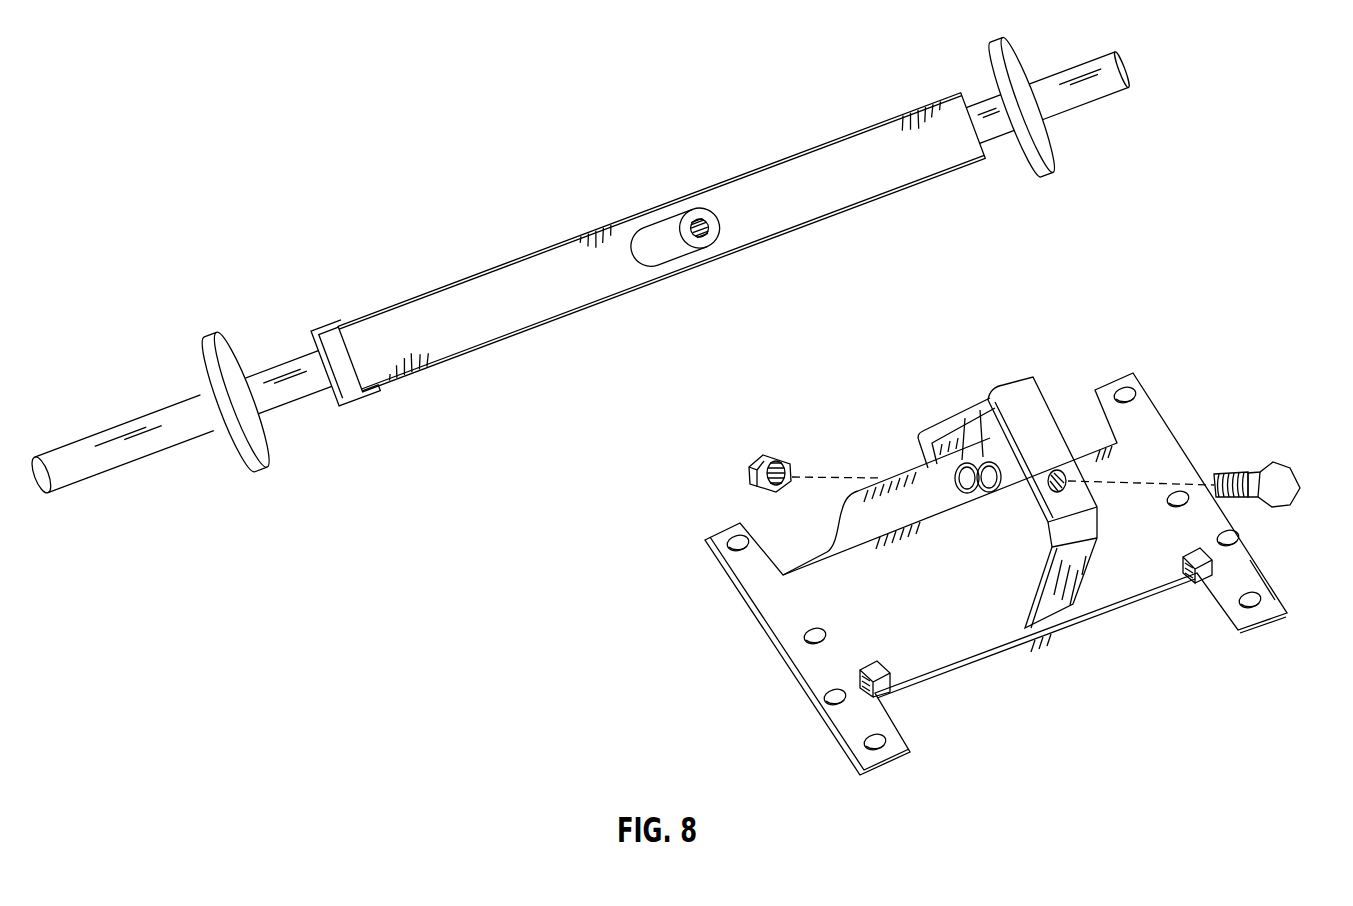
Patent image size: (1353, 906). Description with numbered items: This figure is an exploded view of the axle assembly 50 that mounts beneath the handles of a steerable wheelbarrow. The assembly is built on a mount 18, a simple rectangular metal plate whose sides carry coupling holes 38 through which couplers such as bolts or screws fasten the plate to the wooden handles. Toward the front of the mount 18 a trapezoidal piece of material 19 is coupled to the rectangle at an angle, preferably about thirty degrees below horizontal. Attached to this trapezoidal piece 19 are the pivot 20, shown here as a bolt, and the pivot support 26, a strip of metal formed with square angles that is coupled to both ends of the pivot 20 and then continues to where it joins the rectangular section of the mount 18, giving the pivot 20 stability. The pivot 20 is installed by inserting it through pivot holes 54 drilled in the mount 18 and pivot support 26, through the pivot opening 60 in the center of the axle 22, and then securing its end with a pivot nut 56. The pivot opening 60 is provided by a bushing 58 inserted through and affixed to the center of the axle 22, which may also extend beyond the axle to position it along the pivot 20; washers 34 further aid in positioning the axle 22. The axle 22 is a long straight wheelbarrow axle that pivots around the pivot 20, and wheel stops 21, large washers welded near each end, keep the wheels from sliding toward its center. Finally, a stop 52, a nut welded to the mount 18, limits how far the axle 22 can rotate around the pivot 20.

The mount 18 is at (762, 597).
The trapezoidal piece of material 19 is at (847, 528).
The pivot 20 is at (1284, 484).
The wheel stop 21 is at (218, 343).
The axle 22 is at (903, 130).
The pivot support 26 is at (1040, 412).
The washers 34 is at (960, 432).
The coupling holes 38 is at (1132, 386).
The axle assembly 50 is at (1147, 258).
The stop 52 is at (890, 692).
The pivot holes 54 is at (1060, 470).
The pivot nut 56 is at (775, 455).
The bushing 58 is at (690, 255).
The pivot opening 60 is at (692, 218).